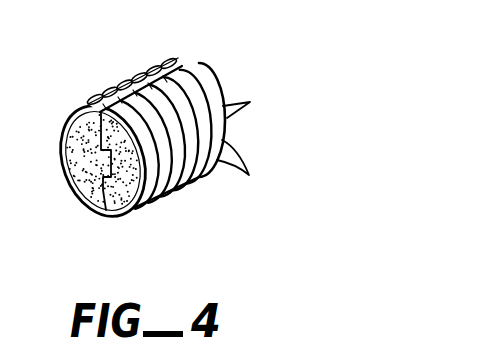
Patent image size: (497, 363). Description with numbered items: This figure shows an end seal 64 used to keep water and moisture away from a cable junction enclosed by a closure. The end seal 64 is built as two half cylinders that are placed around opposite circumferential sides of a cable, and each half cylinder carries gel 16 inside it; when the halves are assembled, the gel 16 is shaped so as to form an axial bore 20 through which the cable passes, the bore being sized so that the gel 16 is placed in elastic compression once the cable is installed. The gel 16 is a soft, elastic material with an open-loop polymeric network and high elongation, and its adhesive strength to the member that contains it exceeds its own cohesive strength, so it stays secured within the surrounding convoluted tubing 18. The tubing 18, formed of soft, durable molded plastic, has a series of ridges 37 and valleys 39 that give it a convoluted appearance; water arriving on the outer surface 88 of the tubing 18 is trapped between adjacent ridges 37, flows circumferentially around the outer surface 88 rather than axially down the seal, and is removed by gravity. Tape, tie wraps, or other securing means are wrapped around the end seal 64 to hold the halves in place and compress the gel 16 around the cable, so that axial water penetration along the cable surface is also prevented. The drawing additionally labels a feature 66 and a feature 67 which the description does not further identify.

The end seal 64 is at (84, 55).
The gel 16 is at (103, 205).
The convoluted tubing 18 is at (70, 184).
The axial bore 20 is at (90, 147).
The valleys 39 is at (219, 128).
The rear ring 67 is at (215, 68).
The serrated rail 66 is at (150, 60).
The ridges 37 is at (248, 175).
The outer surface 88 is at (190, 180).